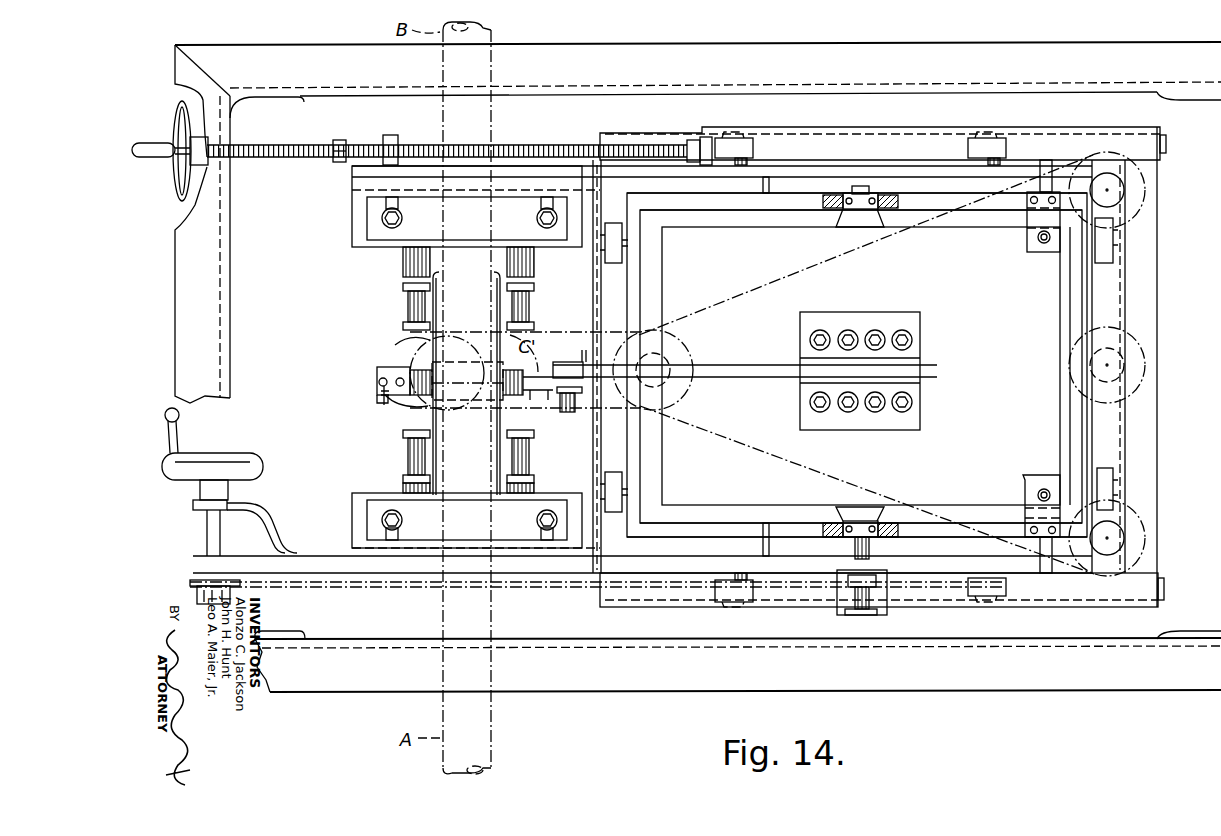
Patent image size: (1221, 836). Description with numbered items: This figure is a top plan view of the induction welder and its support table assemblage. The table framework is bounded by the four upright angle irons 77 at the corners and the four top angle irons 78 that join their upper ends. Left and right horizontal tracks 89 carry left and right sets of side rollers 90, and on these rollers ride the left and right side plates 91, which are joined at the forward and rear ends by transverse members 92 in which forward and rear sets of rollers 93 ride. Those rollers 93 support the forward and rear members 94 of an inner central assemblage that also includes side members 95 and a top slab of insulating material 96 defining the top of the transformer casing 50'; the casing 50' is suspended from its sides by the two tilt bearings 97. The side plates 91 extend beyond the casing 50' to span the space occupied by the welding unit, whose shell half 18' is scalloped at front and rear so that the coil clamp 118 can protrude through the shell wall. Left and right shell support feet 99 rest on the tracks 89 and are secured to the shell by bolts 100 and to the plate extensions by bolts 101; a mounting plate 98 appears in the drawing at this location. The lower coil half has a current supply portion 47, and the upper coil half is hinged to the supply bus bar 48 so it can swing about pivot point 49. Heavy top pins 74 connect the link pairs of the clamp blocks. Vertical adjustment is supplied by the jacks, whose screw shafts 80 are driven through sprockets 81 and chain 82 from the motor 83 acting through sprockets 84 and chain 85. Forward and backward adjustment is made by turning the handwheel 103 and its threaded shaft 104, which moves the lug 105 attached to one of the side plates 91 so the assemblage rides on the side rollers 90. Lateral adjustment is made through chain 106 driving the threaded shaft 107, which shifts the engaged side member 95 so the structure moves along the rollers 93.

The top angle irons 78 is at (830, 44).
The upright angle irons 77 is at (258, 100).
The handwheel 103 is at (176, 138).
The threaded shaft 104 is at (525, 144).
The lug 105 is at (390, 134).
The horizontal tracks 89 is at (932, 128).
The side rollers 90 is at (757, 147).
The tilt bearings 97 is at (856, 188).
The side plates 91 is at (352, 172).
The mounting plates 98 is at (352, 190).
The bolts 101 is at (401, 216).
The bolts 100 is at (536, 215).
The shell support feet 99 is at (407, 232).
The top pins 74 is at (515, 303).
The sprockets 84 is at (410, 348).
The motor 83 is at (380, 362).
The clamping means 118 is at (375, 385).
The shell upper half 18' is at (377, 388).
The chain 85 is at (547, 336).
The current supply portion 47 is at (573, 362).
The supply bus bar 48 is at (737, 382).
The pivot point 49 is at (567, 413).
The transverse members 92 is at (594, 290).
The forward and rear members 94 is at (641, 294).
The top slab of insulating material 96 is at (832, 210).
The side members 95 is at (1005, 204).
The casing 50' is at (1014, 524).
The screw shaft 80 is at (1147, 210).
The sprocket 81 is at (1122, 222).
The chain 82 is at (822, 478).
The rollers 93 is at (603, 258).
The shaft 107 is at (870, 548).
The chain 106 is at (560, 585).